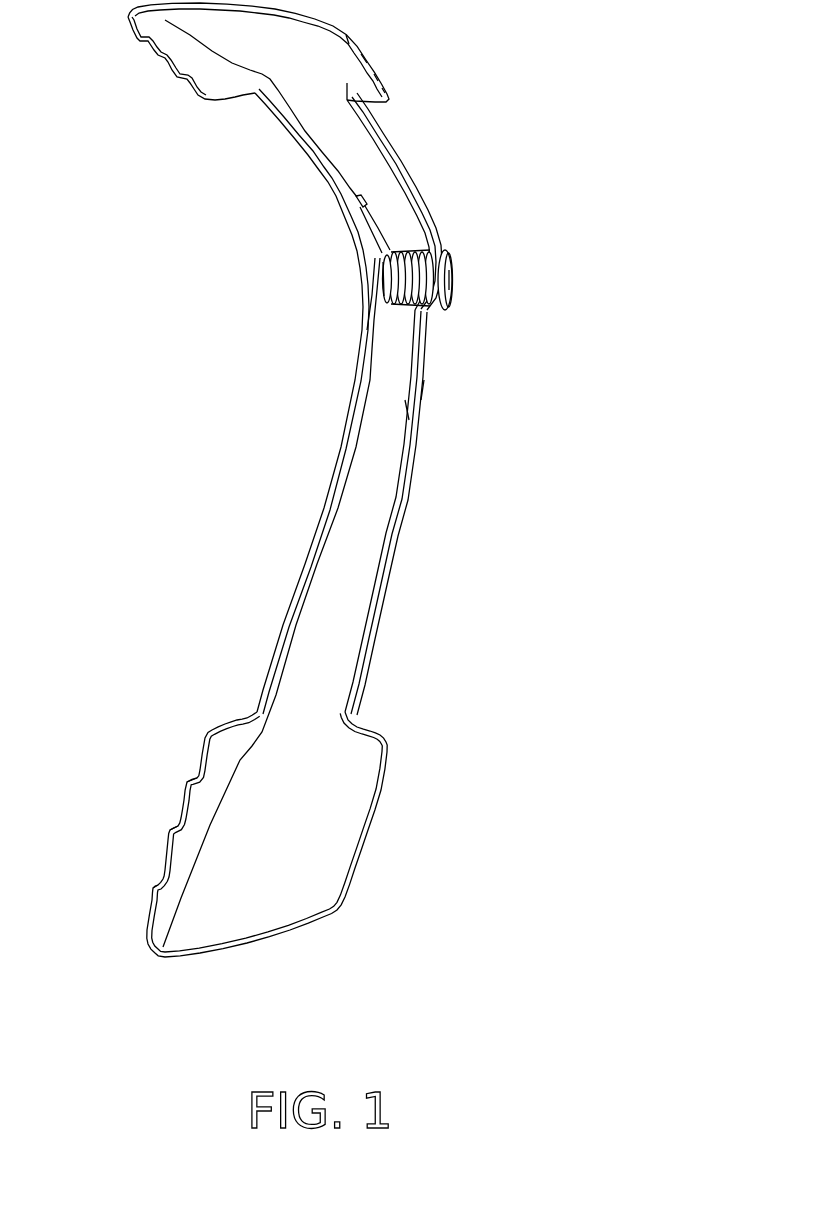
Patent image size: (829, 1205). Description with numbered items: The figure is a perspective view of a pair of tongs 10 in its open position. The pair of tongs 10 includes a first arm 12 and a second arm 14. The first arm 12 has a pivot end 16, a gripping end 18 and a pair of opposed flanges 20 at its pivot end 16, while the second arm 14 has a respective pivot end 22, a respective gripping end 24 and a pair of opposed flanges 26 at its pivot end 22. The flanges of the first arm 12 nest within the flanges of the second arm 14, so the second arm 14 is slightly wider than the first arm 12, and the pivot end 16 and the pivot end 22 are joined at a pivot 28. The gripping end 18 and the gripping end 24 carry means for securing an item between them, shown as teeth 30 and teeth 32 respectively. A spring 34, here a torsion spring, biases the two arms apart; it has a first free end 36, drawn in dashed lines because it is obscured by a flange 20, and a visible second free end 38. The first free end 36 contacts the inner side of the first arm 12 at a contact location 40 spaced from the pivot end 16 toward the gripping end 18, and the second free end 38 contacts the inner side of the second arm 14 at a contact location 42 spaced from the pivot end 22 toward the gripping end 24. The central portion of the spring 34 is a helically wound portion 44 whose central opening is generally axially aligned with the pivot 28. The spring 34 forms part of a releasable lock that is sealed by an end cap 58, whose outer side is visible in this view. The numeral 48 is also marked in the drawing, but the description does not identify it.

The pair of tongs 10 is at (413, 484).
The first arm 12 is at (393, 534).
The second arm 14 is at (434, 218).
The pivot end 16 is at (441, 316).
The gripping end 18 is at (380, 834).
The pair of opposed flanges 20 is at (380, 319).
The pivot end 22 is at (453, 251).
The gripping end 24 is at (388, 98).
The pair of opposed flanges 26 is at (371, 239).
The pivot 28 is at (455, 282).
The teeth 30 is at (180, 814).
The teeth 32 is at (160, 57).
The spring 34 is at (370, 298).
The first free end 36 is at (428, 389).
The second free end 38 is at (363, 206).
The contact location 40 is at (407, 409).
The contact location 42 is at (345, 166).
The helically wound portion 44 is at (394, 275).
The arm wall 48 is at (354, 285).
The end cap 58 is at (454, 299).